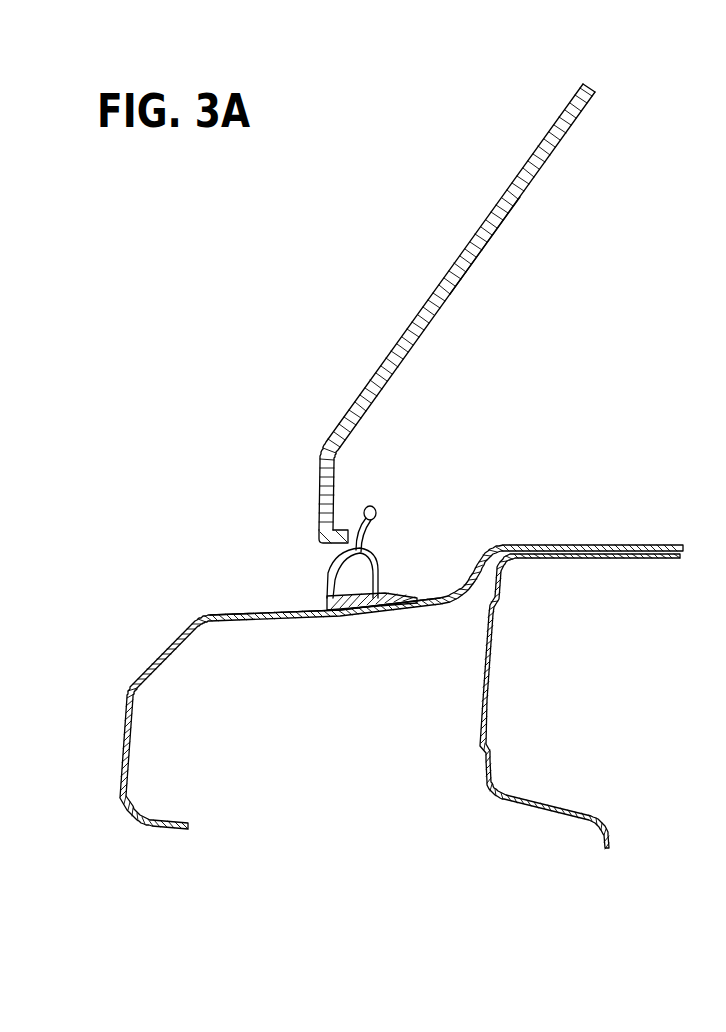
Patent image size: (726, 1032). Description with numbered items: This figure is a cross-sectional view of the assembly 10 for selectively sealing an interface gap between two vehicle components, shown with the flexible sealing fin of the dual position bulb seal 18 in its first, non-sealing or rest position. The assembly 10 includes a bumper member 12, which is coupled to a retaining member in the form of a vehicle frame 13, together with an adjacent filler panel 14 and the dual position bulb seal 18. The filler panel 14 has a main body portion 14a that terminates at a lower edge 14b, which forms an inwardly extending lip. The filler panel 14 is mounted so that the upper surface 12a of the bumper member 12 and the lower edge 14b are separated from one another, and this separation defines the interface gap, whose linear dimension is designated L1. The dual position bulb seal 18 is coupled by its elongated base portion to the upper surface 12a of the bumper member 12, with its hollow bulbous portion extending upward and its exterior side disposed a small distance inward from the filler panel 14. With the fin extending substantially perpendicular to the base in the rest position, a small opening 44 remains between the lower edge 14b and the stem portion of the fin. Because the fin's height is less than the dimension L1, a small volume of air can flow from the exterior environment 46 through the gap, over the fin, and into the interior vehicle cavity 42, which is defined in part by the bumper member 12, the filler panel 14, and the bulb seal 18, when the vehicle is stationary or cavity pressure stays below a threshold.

The assembly 10 is at (316, 263).
The bumper member 12 is at (117, 742).
The upper surface of the bumper member 12a is at (232, 613).
The vehicle frame 13 is at (488, 693).
The filler panel 14 is at (436, 242).
The main body portion 14a is at (455, 288).
The lower edge 14b is at (330, 530).
The dual position bulb seal 18 is at (391, 569).
The interior vehicle cavity 42 is at (524, 403).
The small opening 44 is at (354, 521).
The exterior environment 46 is at (283, 356).
The linear dimension of the interface gap L1 is at (301, 545).